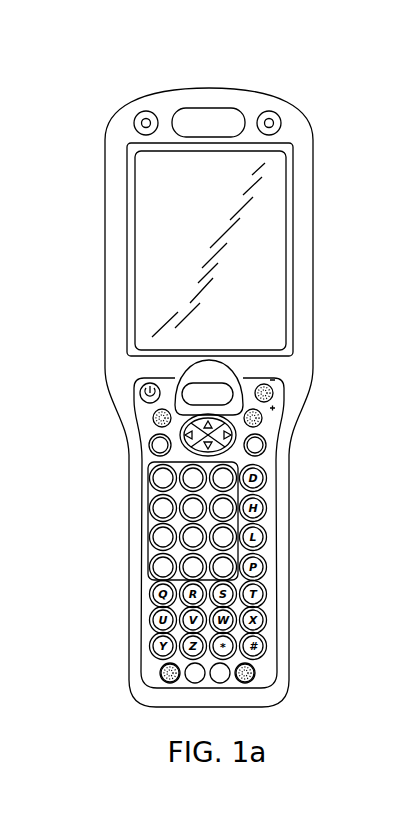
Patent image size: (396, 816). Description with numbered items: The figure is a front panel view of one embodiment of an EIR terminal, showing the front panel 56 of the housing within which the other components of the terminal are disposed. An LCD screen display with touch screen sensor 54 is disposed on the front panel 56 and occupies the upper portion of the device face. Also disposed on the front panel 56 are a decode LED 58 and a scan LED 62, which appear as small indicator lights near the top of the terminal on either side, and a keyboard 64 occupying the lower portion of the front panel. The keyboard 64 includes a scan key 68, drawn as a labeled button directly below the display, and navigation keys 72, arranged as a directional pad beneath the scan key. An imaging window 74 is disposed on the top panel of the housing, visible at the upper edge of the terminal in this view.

The LCD screen display with touch screen sensor 54 is at (158, 265).
The front panel 56 is at (118, 208).
The decode LED 58 is at (134, 112).
The scan LED 62 is at (280, 112).
The keyboard 64 is at (158, 523).
The scan key 68 is at (176, 366).
The navigation keys 72 is at (180, 433).
The imaging window 74 is at (207, 87).